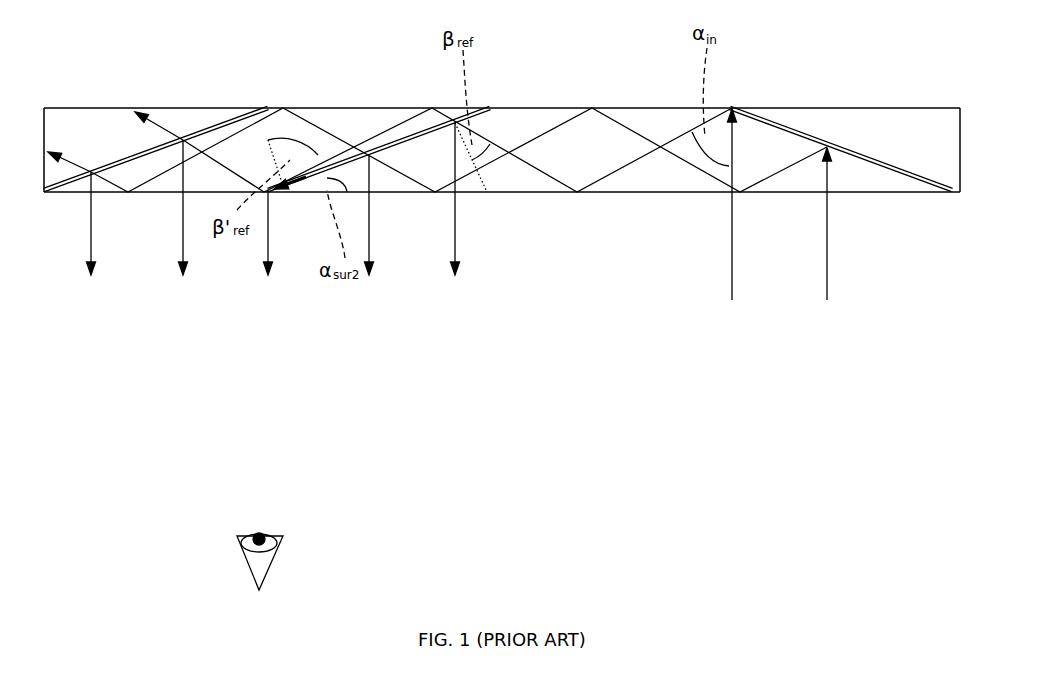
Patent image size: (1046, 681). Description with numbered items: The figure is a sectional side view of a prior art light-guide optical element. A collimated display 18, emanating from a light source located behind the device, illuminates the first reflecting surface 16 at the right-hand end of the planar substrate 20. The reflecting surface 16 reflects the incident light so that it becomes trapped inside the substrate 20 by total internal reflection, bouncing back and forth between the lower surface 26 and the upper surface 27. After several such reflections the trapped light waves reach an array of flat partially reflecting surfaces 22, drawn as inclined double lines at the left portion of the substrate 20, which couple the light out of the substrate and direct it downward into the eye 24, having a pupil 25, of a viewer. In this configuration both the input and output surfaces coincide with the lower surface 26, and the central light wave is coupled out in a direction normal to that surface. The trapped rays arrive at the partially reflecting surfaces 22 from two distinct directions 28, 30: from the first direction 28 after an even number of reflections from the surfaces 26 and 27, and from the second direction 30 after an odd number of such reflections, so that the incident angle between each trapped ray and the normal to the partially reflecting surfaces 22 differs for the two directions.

The first reflecting surface 16 is at (885, 160).
The collimated display 18 is at (827, 240).
The planar substrate 20 is at (833, 123).
The partially reflecting surfaces 22 is at (447, 107).
The eye 24 is at (272, 563).
The pupil 25 is at (262, 532).
The lower surface 26 is at (517, 195).
The upper surface 27 is at (512, 108).
The first direction 28 is at (568, 108).
The second direction 30 is at (680, 158).